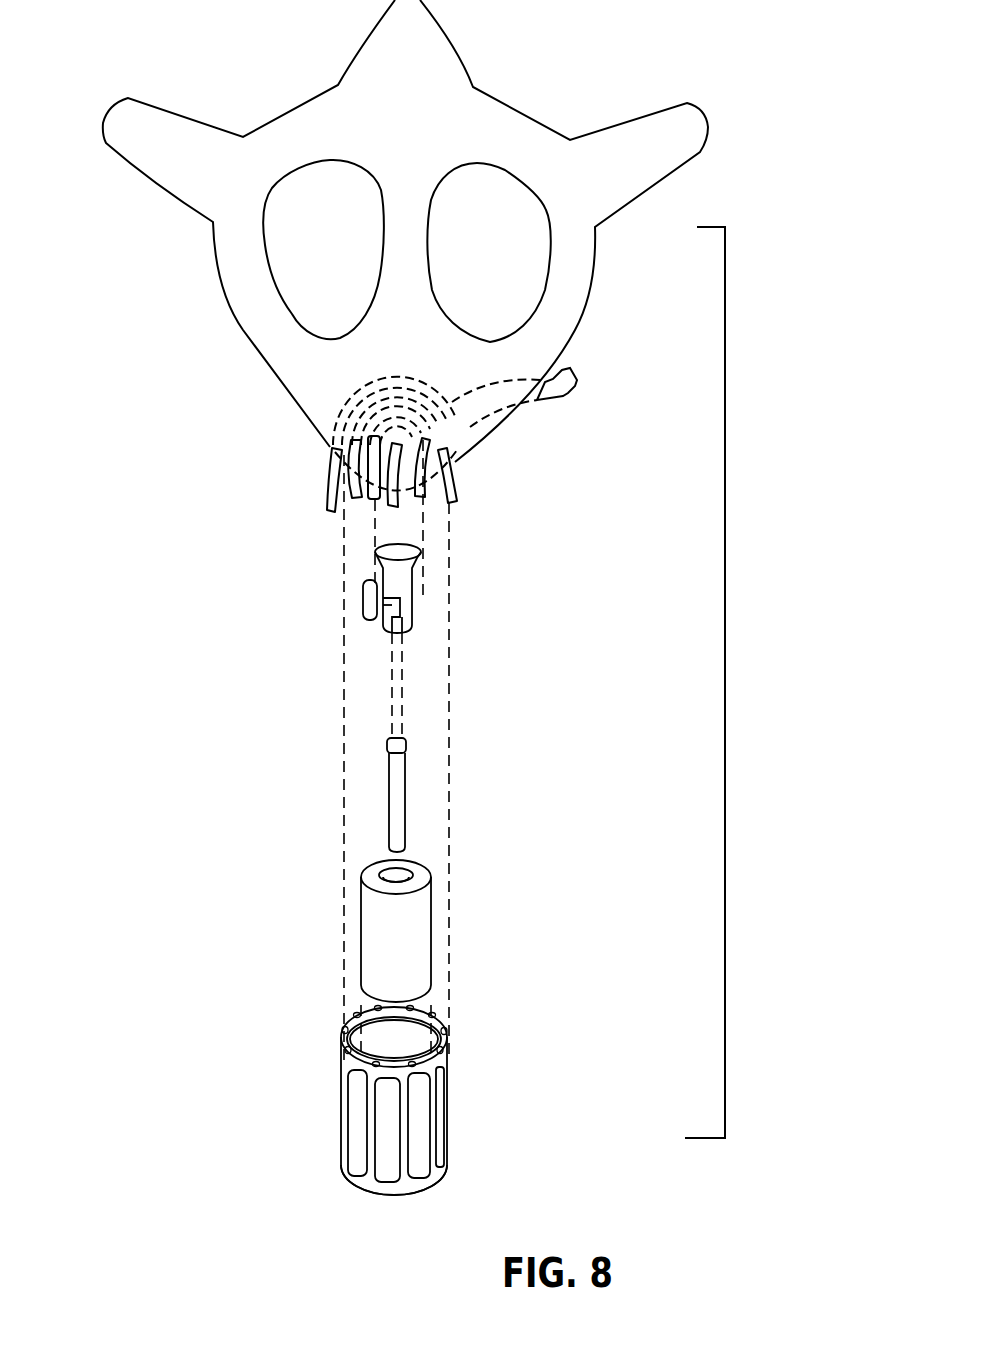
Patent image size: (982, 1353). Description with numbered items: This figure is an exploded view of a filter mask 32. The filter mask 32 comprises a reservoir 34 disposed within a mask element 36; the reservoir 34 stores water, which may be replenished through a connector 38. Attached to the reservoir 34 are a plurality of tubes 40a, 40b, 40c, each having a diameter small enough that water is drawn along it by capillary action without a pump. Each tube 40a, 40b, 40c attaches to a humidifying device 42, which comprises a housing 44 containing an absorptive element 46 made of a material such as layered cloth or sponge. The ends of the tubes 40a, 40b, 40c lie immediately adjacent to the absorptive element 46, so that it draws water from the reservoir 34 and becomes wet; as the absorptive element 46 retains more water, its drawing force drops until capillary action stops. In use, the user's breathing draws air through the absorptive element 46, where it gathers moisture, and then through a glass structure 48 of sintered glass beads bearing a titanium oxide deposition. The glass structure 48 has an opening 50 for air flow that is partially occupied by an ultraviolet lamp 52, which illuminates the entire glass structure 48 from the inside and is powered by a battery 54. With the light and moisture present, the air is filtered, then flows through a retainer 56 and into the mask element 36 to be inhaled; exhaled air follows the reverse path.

The filter mask 32 is at (730, 600).
The reservoir 34 is at (469, 423).
The mask element 36 is at (193, 333).
The connector 38 is at (578, 380).
The tube 40a is at (458, 497).
The tube 40b is at (327, 490).
The tube 40c is at (390, 503).
The humidifying device 42 is at (346, 1129).
The housing 44 is at (385, 1187).
The absorptive element 46 is at (422, 1130).
The glass structure 48 is at (444, 922).
The opening 50 is at (412, 875).
The ultraviolet lamp 52 is at (402, 797).
The battery 54 is at (367, 610).
The retainer 56 is at (408, 585).